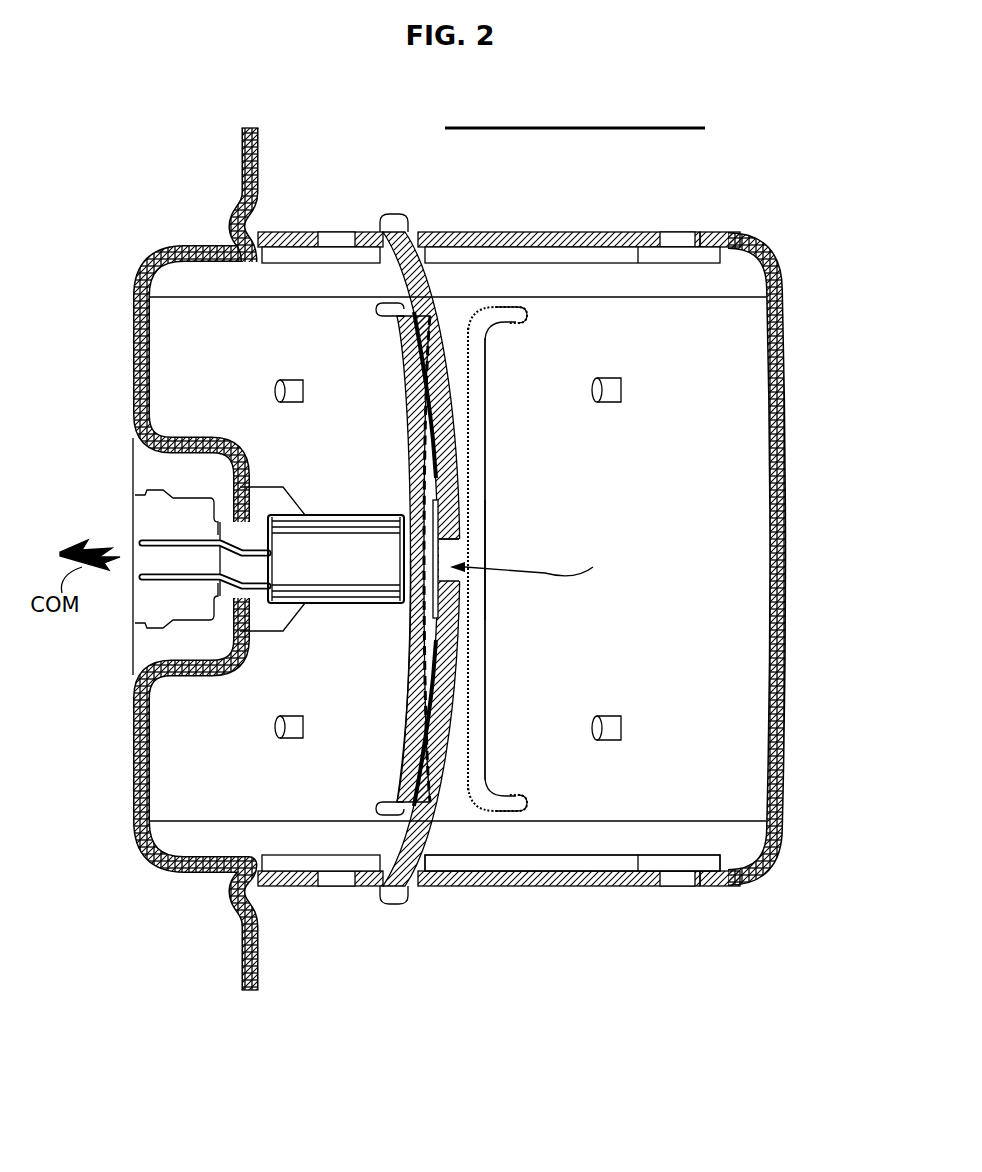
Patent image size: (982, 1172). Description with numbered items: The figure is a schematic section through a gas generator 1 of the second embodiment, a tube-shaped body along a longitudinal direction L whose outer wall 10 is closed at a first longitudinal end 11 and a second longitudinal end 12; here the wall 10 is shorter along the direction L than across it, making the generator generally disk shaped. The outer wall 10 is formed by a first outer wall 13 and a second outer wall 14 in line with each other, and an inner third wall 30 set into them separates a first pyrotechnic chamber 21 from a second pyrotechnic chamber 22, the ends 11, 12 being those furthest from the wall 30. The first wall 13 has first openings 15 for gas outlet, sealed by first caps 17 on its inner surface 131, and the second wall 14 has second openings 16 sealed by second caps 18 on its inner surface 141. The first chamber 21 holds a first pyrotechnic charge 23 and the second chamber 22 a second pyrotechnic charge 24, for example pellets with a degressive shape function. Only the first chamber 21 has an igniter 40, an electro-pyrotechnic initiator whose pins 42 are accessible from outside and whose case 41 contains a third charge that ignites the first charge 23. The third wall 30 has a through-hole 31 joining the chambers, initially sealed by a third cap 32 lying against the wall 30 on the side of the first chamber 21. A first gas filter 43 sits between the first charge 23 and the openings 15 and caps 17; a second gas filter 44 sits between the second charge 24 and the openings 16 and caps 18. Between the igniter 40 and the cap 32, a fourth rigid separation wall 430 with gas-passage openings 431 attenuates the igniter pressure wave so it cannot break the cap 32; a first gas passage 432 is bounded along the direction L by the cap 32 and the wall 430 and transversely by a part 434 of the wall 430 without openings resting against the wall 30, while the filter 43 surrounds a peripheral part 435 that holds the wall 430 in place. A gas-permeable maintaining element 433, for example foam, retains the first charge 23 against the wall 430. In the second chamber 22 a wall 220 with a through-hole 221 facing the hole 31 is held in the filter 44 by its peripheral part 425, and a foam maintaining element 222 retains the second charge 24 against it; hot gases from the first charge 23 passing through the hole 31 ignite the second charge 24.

The gas generator 1 is at (797, 206).
The outer wall 10 is at (290, 240).
The first longitudinal end 11 is at (142, 740).
The second longitudinal end 12 is at (781, 738).
The first outer wall 13 is at (382, 234).
The second outer wall 14 is at (543, 240).
The first openings 15 is at (338, 240).
The second openings 16 is at (678, 240).
The first caps 17 is at (340, 250).
The second caps 18 is at (662, 262).
The first pyrotechnic chamber 21 is at (197, 803).
The second pyrotechnic chamber 22 is at (587, 795).
The first pyrotechnic charge 23 is at (304, 390).
The second pyrotechnic charge 24 is at (622, 390).
The third wall 30 is at (452, 630).
The through-hole 31 is at (537, 564).
The third cap 32 is at (462, 548).
The igniter 40 is at (292, 533).
The case 41 is at (353, 527).
The pins 42 is at (143, 540).
The first gas filter 43 is at (393, 890).
The second gas filter 44 is at (520, 842).
The inner surface of first wall 131 is at (318, 245).
The inner surface of second wall 141 is at (703, 238).
The wall 220 is at (472, 392).
The through-hole 221 is at (440, 533).
The maintaining element 222 is at (482, 437).
The peripheral part 425 is at (522, 324).
The fourth rigid separation wall 430 is at (410, 356).
The first gas-passage openings 431 is at (424, 478).
The first gas passage 432 is at (438, 555).
The maintaining element 433 is at (412, 700).
The part of wall 430 434 is at (437, 737).
The peripheral part 435 is at (387, 806).
The longitudinal direction L is at (576, 126).